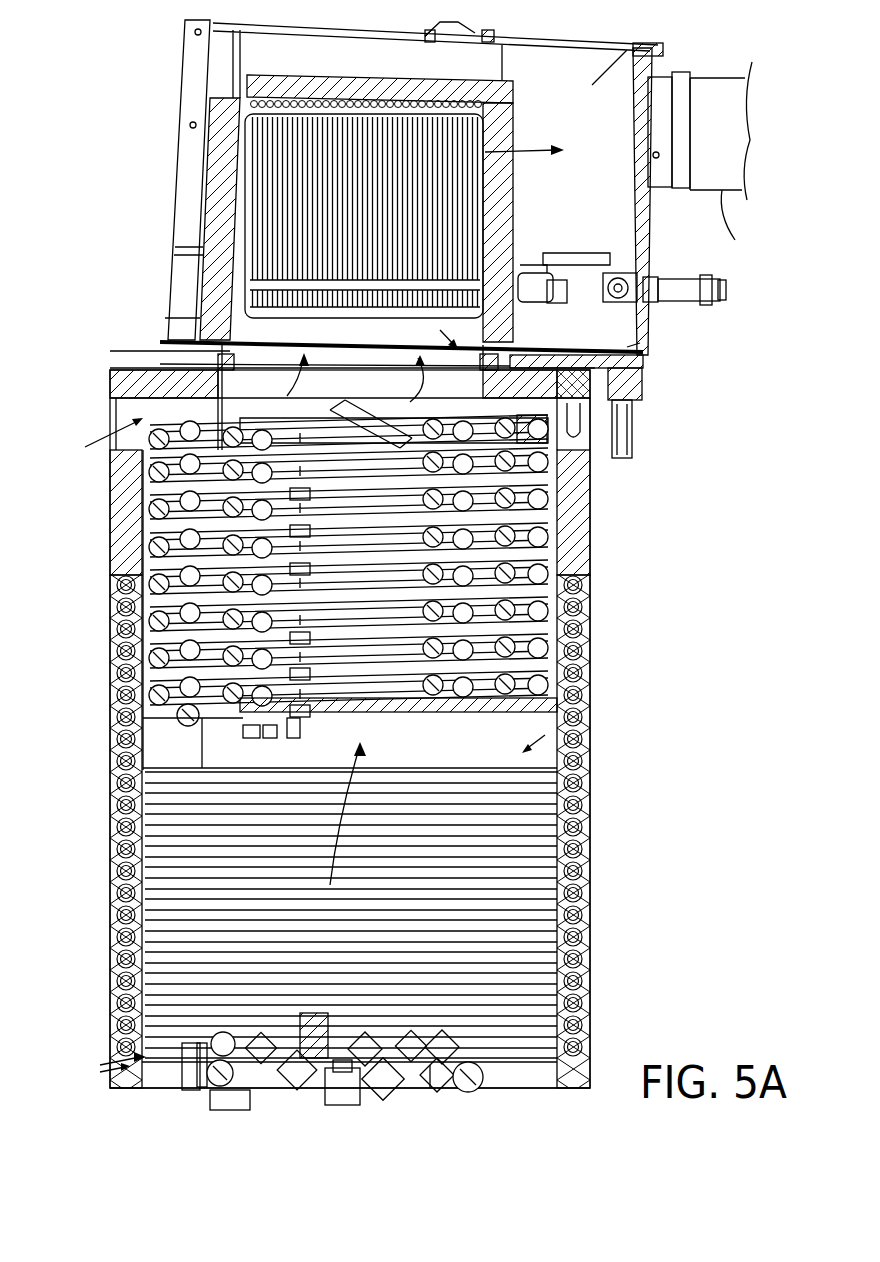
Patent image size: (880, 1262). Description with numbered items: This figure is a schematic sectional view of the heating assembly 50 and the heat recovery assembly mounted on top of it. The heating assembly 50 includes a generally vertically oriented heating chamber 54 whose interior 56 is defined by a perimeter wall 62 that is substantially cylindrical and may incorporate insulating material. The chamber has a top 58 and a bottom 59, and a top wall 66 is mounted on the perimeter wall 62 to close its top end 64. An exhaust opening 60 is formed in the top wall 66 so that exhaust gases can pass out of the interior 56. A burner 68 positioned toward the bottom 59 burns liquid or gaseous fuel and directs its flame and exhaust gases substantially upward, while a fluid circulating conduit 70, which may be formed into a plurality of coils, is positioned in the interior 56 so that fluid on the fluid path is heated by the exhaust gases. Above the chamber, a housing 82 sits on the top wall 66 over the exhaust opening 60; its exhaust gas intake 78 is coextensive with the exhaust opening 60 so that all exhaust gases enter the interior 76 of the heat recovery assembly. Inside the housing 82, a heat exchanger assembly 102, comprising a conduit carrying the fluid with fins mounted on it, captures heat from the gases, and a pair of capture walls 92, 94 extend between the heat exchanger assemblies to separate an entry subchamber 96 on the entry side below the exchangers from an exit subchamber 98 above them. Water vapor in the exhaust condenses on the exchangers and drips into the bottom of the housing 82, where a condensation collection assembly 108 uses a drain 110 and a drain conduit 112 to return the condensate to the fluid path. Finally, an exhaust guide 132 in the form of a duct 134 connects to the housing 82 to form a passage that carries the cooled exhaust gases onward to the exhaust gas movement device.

The heating assembly 50 is at (608, 620).
The heating chamber 54 is at (590, 740).
The interior 56 is at (537, 1080).
The top 58 is at (103, 743).
The bottom 59 is at (94, 1073).
The exhaust opening 60 is at (222, 351).
The perimeter wall 62 is at (590, 547).
The top end 64 is at (112, 405).
The top wall 66 is at (633, 417).
The burner 68 is at (392, 1107).
The fluid circulating conduit 70 is at (560, 653).
The interior 76 is at (283, 110).
The exhaust gas intake 78 is at (168, 318).
The housing 82 is at (558, 45).
The capture wall 92 is at (200, 167).
The capture wall 94 is at (513, 233).
The entry subchamber 96 is at (260, 353).
The exit subchamber 98 is at (678, 106).
The heat exchanger assembly 102 is at (247, 150).
The condensation collection assembly 108 is at (570, 353).
The drain 110 is at (632, 388).
The drain conduit 112 is at (633, 450).
The exhaust guide 132 is at (735, 200).
The duct 134 is at (718, 77).